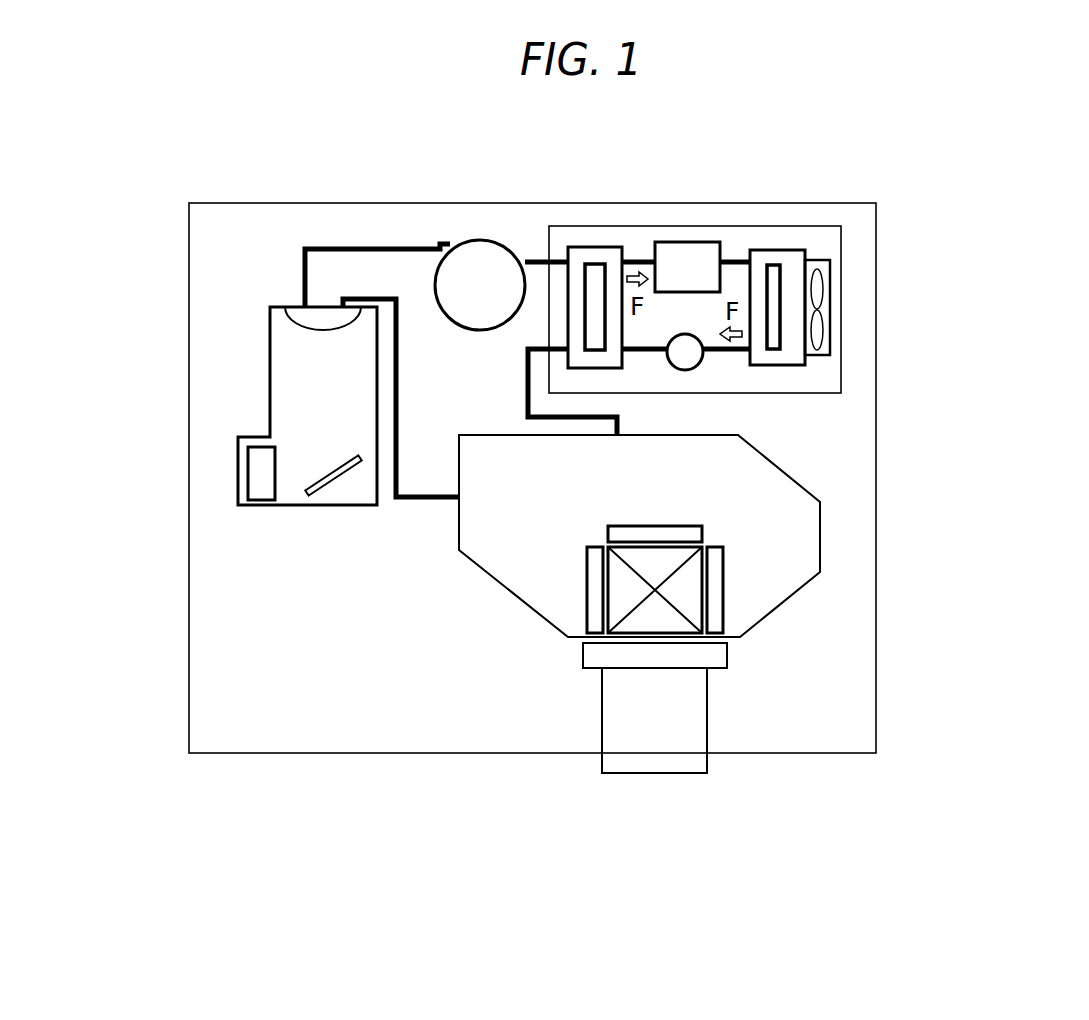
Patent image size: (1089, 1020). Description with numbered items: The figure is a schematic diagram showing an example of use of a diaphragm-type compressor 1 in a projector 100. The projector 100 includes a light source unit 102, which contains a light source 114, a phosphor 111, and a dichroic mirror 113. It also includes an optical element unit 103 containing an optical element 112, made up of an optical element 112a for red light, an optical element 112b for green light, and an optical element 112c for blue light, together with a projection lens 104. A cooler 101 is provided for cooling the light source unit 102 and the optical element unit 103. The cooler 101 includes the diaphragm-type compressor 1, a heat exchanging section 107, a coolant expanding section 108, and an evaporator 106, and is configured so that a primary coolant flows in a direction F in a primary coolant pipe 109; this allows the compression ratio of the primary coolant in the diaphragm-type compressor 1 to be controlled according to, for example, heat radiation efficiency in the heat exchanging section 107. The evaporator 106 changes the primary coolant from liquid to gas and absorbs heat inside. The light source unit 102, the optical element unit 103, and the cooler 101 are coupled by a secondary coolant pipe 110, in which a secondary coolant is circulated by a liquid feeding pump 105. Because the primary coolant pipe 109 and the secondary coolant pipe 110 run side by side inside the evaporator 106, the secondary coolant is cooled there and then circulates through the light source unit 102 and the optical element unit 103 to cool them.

The projector 100 is at (942, 211).
The cooler 101 is at (640, 225).
The diaphragm-type compressor 1 is at (685, 252).
The light source unit 102 is at (295, 507).
The optical element unit 103 is at (470, 560).
The projection lens 104 is at (633, 732).
The liquid feeding pump 105 is at (477, 258).
The evaporator 106 is at (592, 257).
The heat exchanging section 107 is at (792, 260).
The coolant expanding section 108 is at (687, 357).
The primary coolant pipe 109 is at (737, 260).
The secondary coolant pipe 110 is at (367, 243).
The phosphor 111 is at (262, 465).
The optical element 112 is at (730, 639).
The optical element for red light 112a is at (595, 587).
The optical element for green light 112b is at (660, 532).
The optical element for blue light 112c is at (717, 588).
The dichroic mirror 113 is at (337, 483).
The light source 114 is at (320, 322).